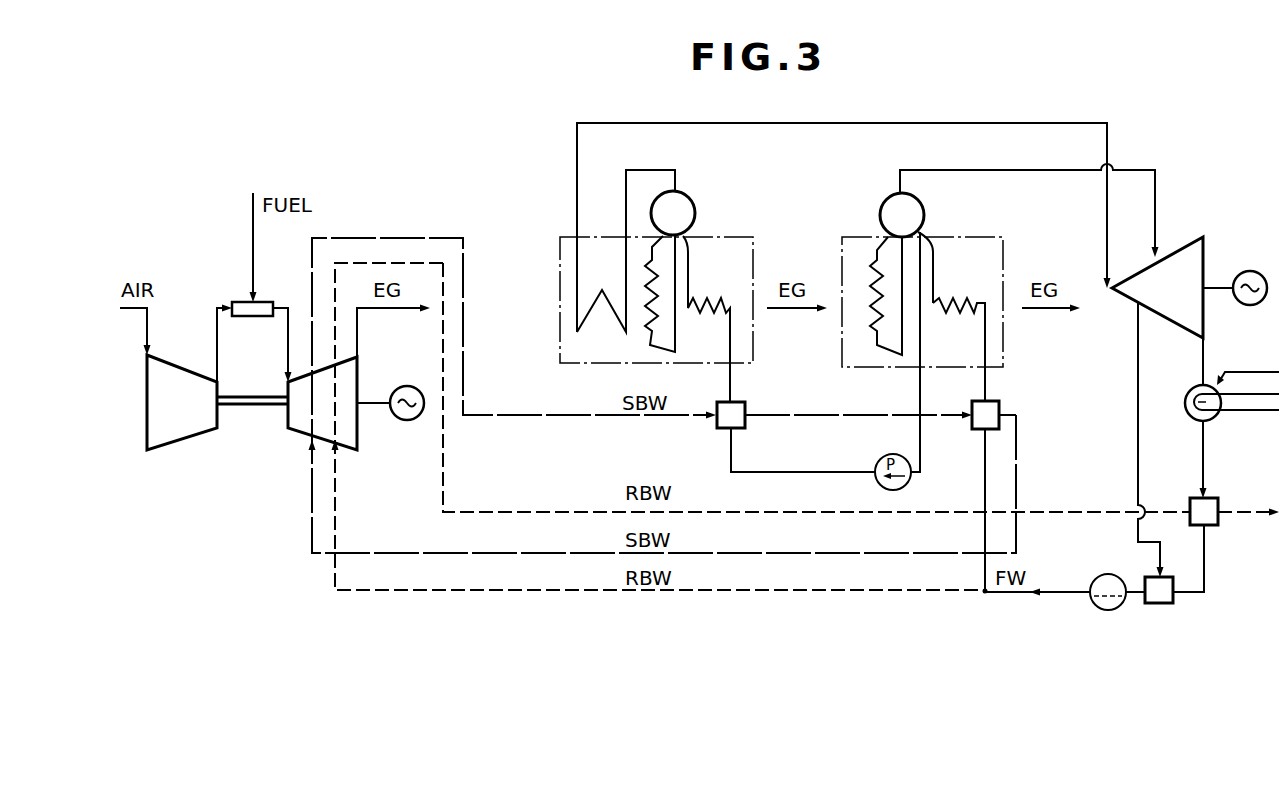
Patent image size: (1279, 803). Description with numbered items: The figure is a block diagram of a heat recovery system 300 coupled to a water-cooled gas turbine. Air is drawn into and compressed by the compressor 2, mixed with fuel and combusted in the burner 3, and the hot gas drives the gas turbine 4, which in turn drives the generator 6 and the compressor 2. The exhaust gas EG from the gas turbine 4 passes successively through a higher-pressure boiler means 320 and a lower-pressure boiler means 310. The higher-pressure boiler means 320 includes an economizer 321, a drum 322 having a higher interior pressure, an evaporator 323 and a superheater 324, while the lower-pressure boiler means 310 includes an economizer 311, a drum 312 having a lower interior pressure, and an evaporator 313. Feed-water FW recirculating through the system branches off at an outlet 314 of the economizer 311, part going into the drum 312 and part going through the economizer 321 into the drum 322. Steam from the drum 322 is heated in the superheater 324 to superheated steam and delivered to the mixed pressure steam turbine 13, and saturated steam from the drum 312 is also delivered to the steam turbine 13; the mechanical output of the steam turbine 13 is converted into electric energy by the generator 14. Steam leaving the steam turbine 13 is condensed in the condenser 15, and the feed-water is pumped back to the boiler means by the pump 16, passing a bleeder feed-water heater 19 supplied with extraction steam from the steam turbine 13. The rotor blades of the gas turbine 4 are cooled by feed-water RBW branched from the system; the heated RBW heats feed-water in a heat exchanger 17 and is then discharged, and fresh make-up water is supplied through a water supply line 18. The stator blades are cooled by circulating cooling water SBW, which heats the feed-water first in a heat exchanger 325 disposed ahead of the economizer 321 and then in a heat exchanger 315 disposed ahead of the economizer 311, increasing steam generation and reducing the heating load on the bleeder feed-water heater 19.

The compressor 2 is at (178, 435).
The burner 3 is at (255, 316).
The gas turbine 4 is at (297, 425).
The generator 6 is at (405, 420).
The steam turbine 13 is at (1192, 237).
The generator 14 is at (1250, 271).
The condenser 15 is at (1217, 417).
The pump 16 is at (1112, 610).
The heat exchanger 17 is at (1218, 500).
The water supply line 18 is at (1245, 372).
The bleeder feed-water heater 19 is at (1162, 603).
The heat recovery system 300 is at (1174, 98).
The lower-pressure boiler means 310 is at (1014, 242).
The economizer 311 is at (947, 300).
The drum 312 is at (917, 196).
The evaporator 313 is at (873, 325).
The outlet 314 is at (922, 237).
The heat exchanger 315 is at (1003, 405).
The higher-pressure boiler means 320 is at (715, 233).
The economizer 321 is at (707, 300).
The drum 322 is at (685, 195).
The evaporator 323 is at (647, 317).
The superheater 324 is at (615, 313).
The heat exchanger 325 is at (745, 402).